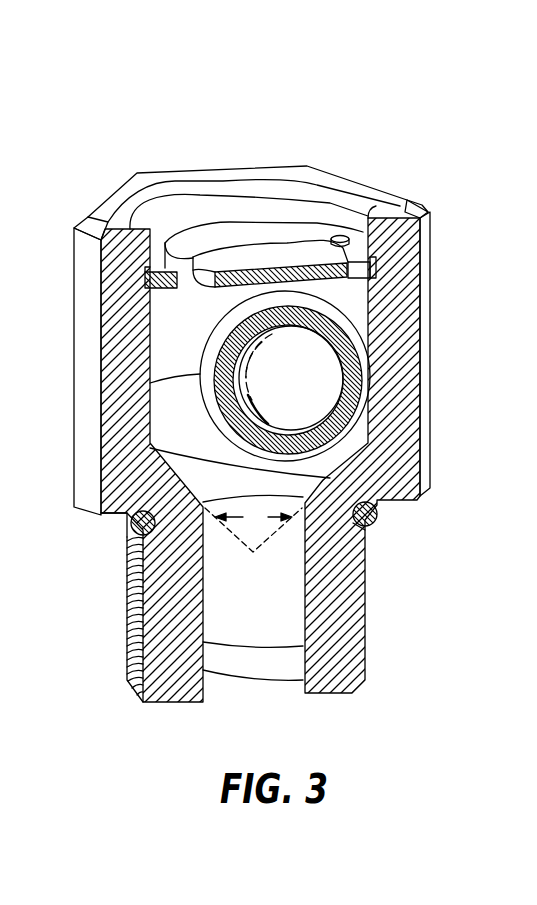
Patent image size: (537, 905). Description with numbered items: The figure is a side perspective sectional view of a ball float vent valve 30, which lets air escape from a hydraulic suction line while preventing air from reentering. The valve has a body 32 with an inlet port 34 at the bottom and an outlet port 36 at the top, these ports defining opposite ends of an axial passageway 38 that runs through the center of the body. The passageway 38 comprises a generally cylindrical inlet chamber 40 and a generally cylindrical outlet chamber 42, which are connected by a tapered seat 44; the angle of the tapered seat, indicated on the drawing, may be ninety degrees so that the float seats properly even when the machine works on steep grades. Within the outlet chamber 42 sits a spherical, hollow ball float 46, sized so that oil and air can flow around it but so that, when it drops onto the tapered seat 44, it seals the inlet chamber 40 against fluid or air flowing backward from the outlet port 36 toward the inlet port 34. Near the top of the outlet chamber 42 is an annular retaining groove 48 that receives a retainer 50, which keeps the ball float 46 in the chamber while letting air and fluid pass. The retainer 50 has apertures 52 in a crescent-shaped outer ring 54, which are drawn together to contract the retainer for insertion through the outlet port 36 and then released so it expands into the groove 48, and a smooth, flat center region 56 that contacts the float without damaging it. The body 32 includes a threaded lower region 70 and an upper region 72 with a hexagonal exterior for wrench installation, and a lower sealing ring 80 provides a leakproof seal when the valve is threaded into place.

The ball float vent valve 30 is at (225, 78).
The body 32 is at (430, 233).
The inlet port 34 is at (305, 693).
The outlet port 36 is at (368, 212).
The axial passageway 38 is at (273, 558).
The inlet chamber 40 is at (257, 607).
The outlet chamber 42 is at (160, 342).
The tapered seat 44 is at (330, 455).
The ball float 46 is at (323, 387).
The annular retaining groove 48 is at (145, 273).
The retainer 50 is at (253, 257).
The apertures 52 is at (340, 236).
The outer ring 54 is at (167, 240).
The center region 56 is at (230, 257).
The lower region 70 is at (362, 660).
The upper region 72 is at (72, 448).
The lower sealing ring 80 is at (130, 532).